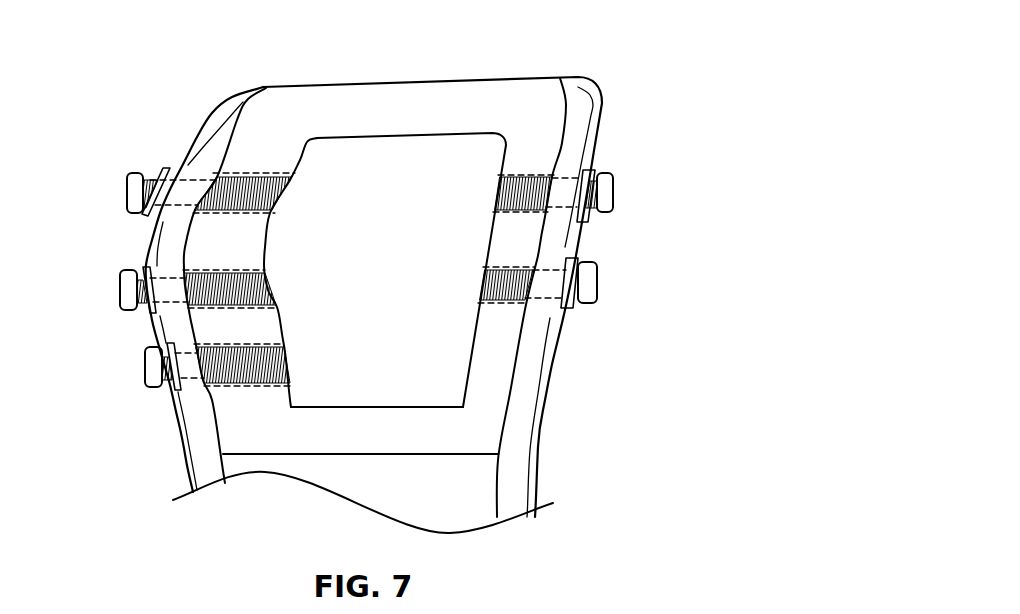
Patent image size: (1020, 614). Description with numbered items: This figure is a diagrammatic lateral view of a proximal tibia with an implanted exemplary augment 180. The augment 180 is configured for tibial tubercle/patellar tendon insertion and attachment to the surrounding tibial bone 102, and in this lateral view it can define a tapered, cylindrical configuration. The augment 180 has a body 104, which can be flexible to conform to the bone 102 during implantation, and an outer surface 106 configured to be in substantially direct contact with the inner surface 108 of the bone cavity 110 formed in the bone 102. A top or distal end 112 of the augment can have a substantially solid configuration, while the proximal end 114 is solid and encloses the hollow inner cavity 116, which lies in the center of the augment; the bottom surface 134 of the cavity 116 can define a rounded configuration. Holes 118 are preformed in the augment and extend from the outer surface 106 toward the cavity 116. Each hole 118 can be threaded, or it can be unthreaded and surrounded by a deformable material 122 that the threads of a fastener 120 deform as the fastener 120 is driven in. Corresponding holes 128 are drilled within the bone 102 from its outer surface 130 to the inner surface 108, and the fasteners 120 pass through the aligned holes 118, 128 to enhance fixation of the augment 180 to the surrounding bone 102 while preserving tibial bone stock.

The bone 102 is at (551, 441).
The body 104 is at (233, 433).
The outer surface 106 is at (518, 360).
The inner surface 108 is at (520, 388).
The bone cavity 110 is at (205, 409).
The distal end 112 is at (321, 471).
The proximal end 114 is at (388, 66).
The inner cavity 116 is at (447, 154).
The holes 118 is at (524, 205).
The fastener 120 is at (615, 192).
The deformable material 122 is at (522, 172).
The holes 128 is at (570, 187).
The outer surface 130 is at (537, 493).
The bottom surface 134 is at (353, 407).
The augment 180 is at (214, 322).